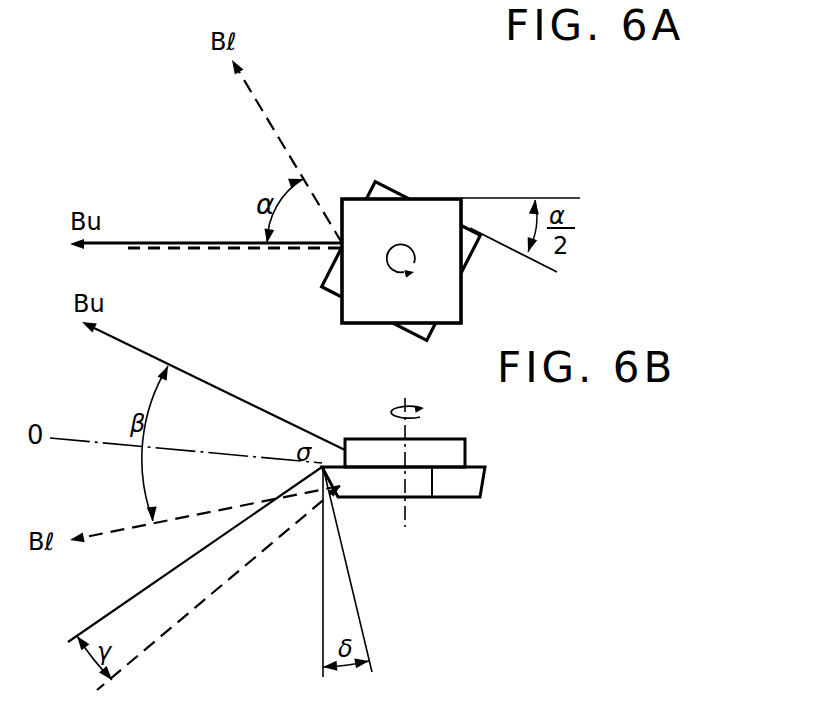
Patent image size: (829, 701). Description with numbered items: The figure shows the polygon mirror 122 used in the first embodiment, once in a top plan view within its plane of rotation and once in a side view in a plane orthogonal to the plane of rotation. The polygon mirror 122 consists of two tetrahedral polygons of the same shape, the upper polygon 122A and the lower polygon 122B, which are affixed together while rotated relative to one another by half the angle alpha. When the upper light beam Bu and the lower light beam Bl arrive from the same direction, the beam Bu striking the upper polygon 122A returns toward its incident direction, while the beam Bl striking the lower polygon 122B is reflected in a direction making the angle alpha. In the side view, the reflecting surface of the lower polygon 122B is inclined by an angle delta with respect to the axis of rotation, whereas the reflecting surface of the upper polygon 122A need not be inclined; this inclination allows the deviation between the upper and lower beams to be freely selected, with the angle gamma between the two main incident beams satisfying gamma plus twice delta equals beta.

In FIG. 6B, the polygon mirror 122 is at (481, 457).
In FIG. 6A, the upper polygon 122A is at (435, 213).
In FIG. 6B, the upper polygon 122A is at (457, 447).
In FIG. 6A, the lower polygon 122B is at (477, 238).
In FIG. 6B, the lower polygon 122B is at (477, 481).